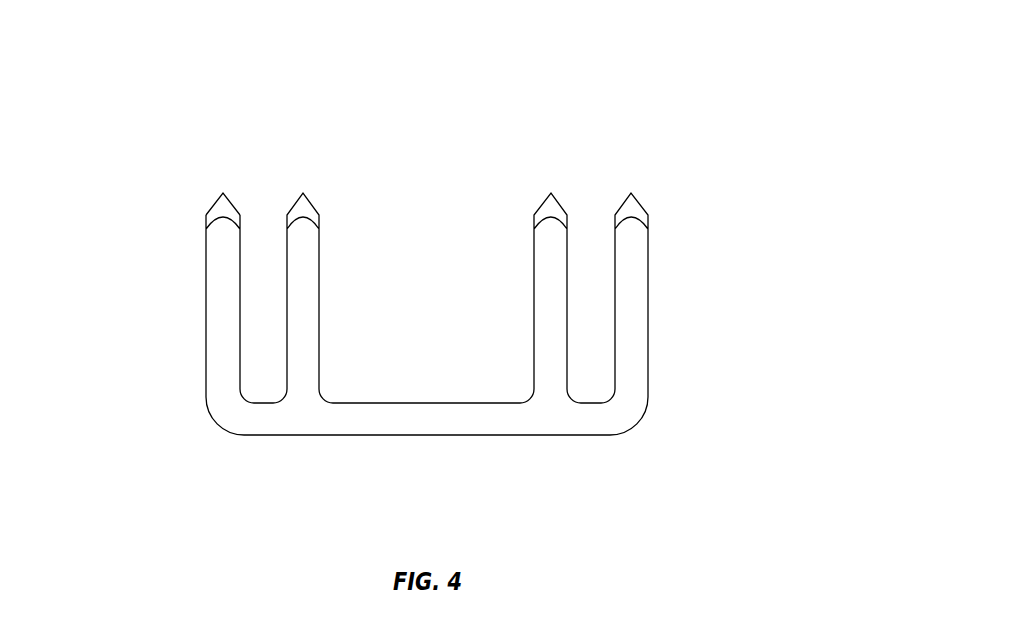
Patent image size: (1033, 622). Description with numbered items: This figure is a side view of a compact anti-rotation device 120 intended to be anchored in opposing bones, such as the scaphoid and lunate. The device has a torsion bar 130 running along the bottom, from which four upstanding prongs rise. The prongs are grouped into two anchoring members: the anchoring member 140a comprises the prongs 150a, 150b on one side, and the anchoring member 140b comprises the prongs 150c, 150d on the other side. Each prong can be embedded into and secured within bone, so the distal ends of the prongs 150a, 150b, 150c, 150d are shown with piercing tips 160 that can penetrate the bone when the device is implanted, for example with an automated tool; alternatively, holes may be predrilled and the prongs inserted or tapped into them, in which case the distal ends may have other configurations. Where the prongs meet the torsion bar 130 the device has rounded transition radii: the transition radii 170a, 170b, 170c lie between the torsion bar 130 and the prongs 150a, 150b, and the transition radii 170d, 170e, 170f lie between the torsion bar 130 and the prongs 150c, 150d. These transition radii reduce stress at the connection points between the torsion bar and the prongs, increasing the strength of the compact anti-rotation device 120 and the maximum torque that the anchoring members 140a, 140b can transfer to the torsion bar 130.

The compact anti-rotation device 120 is at (623, 83).
The torsion bar 130 is at (444, 422).
The anchoring member 140a is at (657, 350).
The anchoring member 140b is at (193, 350).
The prong 150a is at (628, 290).
The prong 150b is at (547, 307).
The prong 150c is at (300, 330).
The prong 150d is at (230, 293).
The piercing tip 160 is at (220, 191).
The transition radius 170a is at (615, 405).
The transition radius 170b is at (571, 406).
The transition radius 170c is at (530, 397).
The transition radius 170d is at (243, 399).
The transition radius 170e is at (282, 400).
The transition radius 170f is at (323, 397).